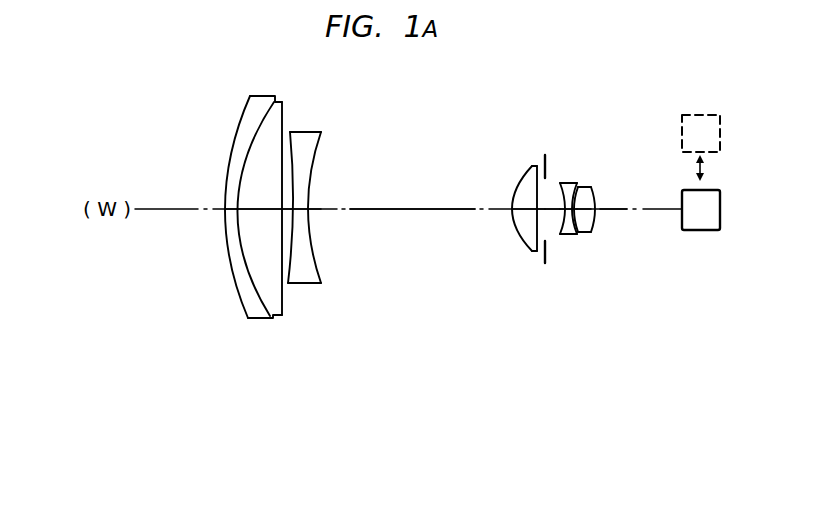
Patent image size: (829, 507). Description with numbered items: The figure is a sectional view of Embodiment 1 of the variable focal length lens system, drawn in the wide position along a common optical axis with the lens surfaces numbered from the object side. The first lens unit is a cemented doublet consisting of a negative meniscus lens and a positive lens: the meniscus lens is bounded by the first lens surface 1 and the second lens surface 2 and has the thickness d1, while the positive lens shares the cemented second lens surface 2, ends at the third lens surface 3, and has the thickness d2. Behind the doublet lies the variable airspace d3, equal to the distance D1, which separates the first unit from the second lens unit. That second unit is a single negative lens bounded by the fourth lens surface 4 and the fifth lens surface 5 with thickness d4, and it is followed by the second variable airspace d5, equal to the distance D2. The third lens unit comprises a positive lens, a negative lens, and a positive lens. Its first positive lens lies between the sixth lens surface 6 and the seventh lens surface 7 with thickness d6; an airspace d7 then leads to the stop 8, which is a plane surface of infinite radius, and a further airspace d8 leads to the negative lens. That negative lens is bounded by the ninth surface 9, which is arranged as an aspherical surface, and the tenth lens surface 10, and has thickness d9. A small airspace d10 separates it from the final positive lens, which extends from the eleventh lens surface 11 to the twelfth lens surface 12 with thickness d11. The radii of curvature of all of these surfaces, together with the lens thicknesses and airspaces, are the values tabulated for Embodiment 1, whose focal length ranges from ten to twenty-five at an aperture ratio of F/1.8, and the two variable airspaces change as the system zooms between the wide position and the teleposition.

The first lens surface 1 is at (242, 296).
The second lens surface 2 is at (264, 300).
The third lens surface 3 is at (279, 298).
The fourth lens surface 4 is at (298, 274).
The fifth lens surface 5 is at (318, 268).
The sixth lens surface 6 is at (515, 236).
The seventh lens surface 7 is at (537, 233).
The stop 8 is at (546, 259).
The ninth surface 9 is at (562, 220).
The tenth lens surface 10 is at (576, 234).
The eleventh lens surface 11 is at (589, 224).
The twelfth lens surface 12 is at (594, 223).
The thickness of the negative meniscus lens d1 is at (230, 209).
The thickness of the positive lens d2 is at (260, 209).
The variable airspace D1 d3 is at (290, 210).
The thickness of the negative lens d4 is at (300, 209).
The variable airspace D2 d5 is at (392, 209).
The thickness of the positive lens d6 is at (518, 209).
The airspace before the stop d7 is at (542, 209).
The airspace after the stop d8 is at (553, 209).
The thickness of the negative lens d9 is at (569, 209).
The airspace d10 is at (585, 209).
The thickness of the positive lens d11 is at (596, 209).